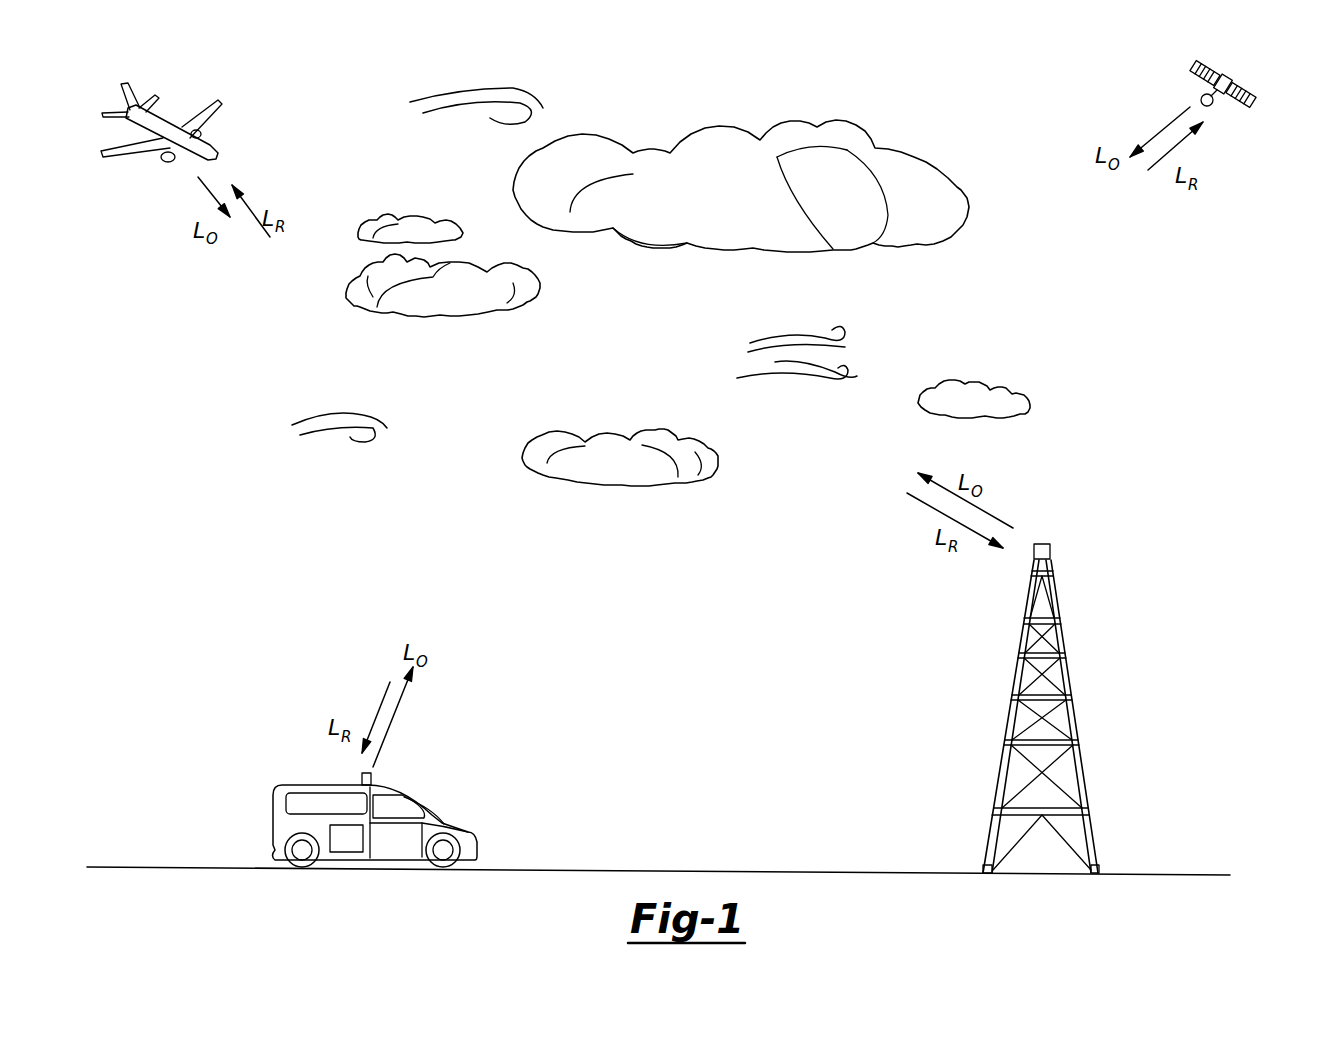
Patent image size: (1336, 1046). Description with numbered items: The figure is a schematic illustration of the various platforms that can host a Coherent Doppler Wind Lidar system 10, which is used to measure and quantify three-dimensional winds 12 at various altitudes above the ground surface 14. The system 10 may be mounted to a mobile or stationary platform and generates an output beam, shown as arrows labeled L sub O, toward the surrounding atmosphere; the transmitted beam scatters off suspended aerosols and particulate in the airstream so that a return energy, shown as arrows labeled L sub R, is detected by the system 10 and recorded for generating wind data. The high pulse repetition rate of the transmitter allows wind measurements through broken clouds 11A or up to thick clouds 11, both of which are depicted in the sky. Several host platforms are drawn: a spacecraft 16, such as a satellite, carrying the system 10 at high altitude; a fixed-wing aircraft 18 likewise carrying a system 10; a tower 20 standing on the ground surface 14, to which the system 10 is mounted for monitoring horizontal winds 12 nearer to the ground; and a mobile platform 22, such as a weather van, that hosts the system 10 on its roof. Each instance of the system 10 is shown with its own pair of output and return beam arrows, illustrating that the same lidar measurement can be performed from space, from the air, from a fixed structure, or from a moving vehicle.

The Coherent Doppler Wind Lidar system 10 is at (360, 778).
The thick clouds 11 is at (858, 120).
The broken clouds 11A is at (403, 187).
The three-dimensional winds 12 is at (552, 86).
The ground surface 14 is at (747, 871).
The spacecraft 16 is at (1236, 70).
The aircraft 18 is at (172, 112).
The tower 20 is at (1070, 685).
The mobile platform 22 is at (385, 787).